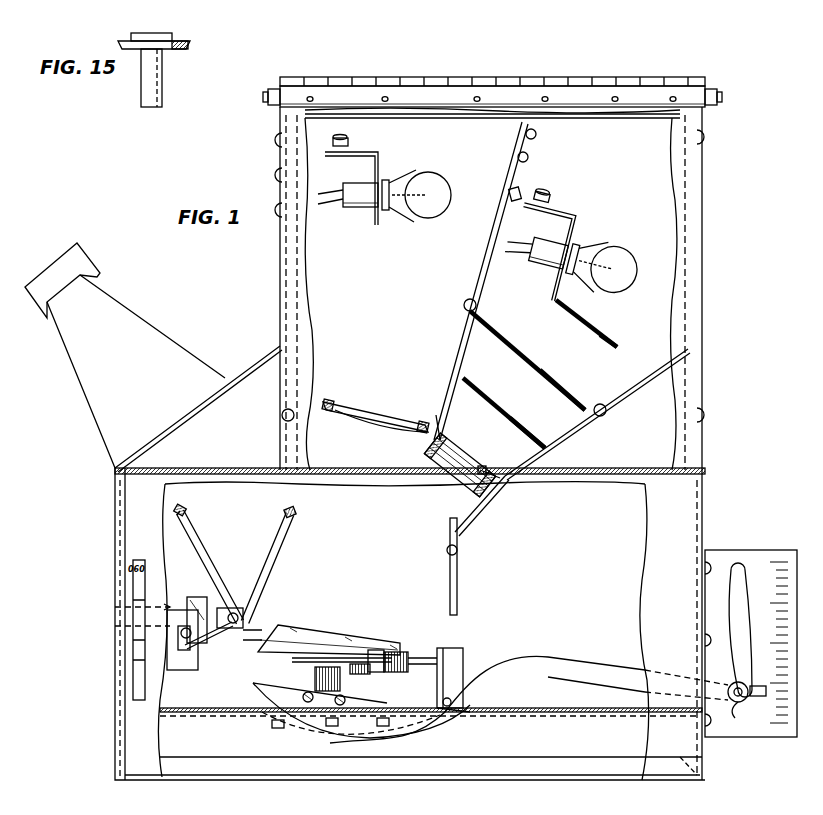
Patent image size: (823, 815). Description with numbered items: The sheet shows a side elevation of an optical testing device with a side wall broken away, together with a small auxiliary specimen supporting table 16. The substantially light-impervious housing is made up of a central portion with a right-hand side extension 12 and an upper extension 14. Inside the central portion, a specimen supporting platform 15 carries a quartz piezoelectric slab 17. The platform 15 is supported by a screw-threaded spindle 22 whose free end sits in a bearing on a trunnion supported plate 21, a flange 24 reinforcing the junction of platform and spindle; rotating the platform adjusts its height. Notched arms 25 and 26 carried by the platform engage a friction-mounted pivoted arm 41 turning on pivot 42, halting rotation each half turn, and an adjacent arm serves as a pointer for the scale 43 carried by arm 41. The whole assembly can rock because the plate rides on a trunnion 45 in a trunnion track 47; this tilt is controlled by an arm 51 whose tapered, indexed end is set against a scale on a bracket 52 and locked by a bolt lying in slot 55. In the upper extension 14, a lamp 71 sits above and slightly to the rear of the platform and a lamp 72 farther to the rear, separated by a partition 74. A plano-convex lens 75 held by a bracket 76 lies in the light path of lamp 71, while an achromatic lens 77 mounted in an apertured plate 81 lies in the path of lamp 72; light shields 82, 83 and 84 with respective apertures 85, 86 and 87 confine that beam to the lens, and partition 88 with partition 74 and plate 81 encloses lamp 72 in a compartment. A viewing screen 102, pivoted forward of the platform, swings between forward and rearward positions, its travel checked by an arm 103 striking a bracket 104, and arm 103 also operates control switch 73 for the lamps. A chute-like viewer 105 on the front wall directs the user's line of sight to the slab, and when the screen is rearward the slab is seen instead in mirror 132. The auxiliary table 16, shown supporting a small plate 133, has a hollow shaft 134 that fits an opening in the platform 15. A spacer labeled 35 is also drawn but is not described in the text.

In FIG. 1, the right-hand side extension 12 is at (690, 514).
In FIG. 1, the upper extension 14 is at (698, 216).
In FIG. 1, the specimen supporting platform 15 is at (376, 664).
In FIG. 15, the auxiliary table 16 is at (188, 45).
In FIG. 1, the quartz piezoelectric slab 17 is at (320, 635).
In FIG. 1, the trunnion supported plate 21 is at (253, 686).
In FIG. 1, the screw-threaded spindle 22 is at (315, 678).
In FIG. 1, the flange 24 is at (290, 667).
In FIG. 1, the arm 25 is at (414, 658).
In FIG. 1, the arm 26 is at (250, 628).
In FIG. 1, the spacer 35 is at (335, 650).
In FIG. 1, the pivoted arm 41 is at (460, 648).
In FIG. 1, the pivot 42 is at (450, 700).
In FIG. 1, the scale 43 is at (455, 695).
In FIG. 1, the trunnion 45 is at (262, 692).
In FIG. 1, the trunnion track 47 is at (300, 730).
In FIG. 1, the arm 51 is at (612, 672).
In FIG. 1, the bracket 52 is at (752, 566).
In FIG. 1, the slot 55 is at (740, 566).
In FIG. 1, the lamp 71 is at (428, 182).
In FIG. 1, the lamp 72 is at (614, 256).
In FIG. 1, the control switch 73 is at (192, 668).
In FIG. 1, the partition 74 is at (468, 312).
In FIG. 1, the plano-convex lens 75 is at (350, 397).
In FIG. 1, the bracket 76 is at (436, 414).
In FIG. 1, the achromatic lens 77 is at (447, 470).
In FIG. 1, the apertured plate 81 is at (486, 472).
In FIG. 1, the light shield 82 is at (608, 340).
In FIG. 1, the light shield 83 is at (493, 343).
In FIG. 1, the light shield 84 is at (478, 394).
In FIG. 1, the aperture 85 is at (580, 318).
In FIG. 1, the aperture 86 is at (540, 372).
In FIG. 1, the aperture 87 is at (510, 414).
In FIG. 1, the partition 88 is at (608, 404).
In FIG. 1, the viewing screen 102 is at (198, 536).
In FIG. 1, the arm 103 is at (219, 640).
In FIG. 1, the bracket 104 is at (197, 598).
In FIG. 1, the chute-like viewer 105 is at (130, 300).
In FIG. 1, the mirror 132 is at (457, 580).
In FIG. 15, the plate 133 is at (150, 33).
In FIG. 15, the hollow shaft 134 is at (162, 93).